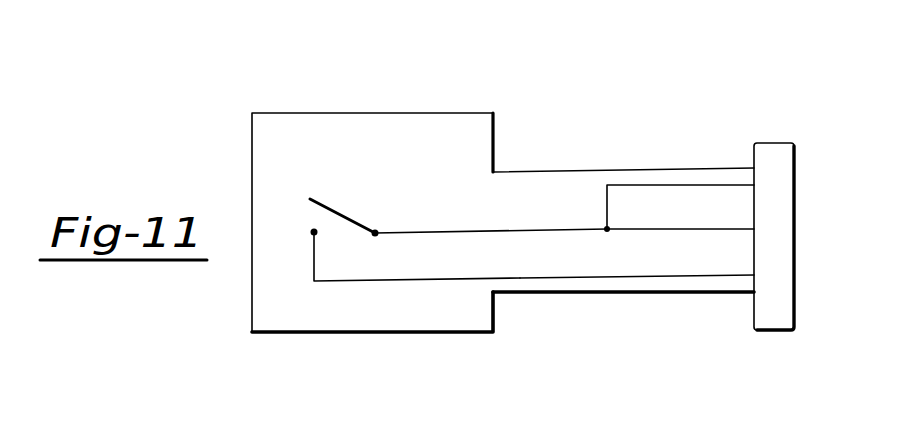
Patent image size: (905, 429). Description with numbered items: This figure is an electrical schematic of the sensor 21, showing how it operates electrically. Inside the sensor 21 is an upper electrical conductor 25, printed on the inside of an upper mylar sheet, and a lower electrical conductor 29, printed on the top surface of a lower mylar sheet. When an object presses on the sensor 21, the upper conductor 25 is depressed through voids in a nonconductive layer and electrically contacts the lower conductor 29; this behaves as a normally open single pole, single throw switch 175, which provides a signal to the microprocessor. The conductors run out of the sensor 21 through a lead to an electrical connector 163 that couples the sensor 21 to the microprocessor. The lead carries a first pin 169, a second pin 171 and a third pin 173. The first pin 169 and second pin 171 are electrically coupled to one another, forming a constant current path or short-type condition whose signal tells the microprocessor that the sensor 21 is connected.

The sensor 21 is at (428, 102).
The electrical conductor 25 is at (435, 231).
The electrical conductor 29 is at (410, 282).
The electrical connector 163 is at (782, 155).
The first pin 169 is at (690, 185).
The second pin 171 is at (717, 228).
The third pin 173 is at (613, 277).
The normally open single pole, single throw switch 175 is at (341, 186).